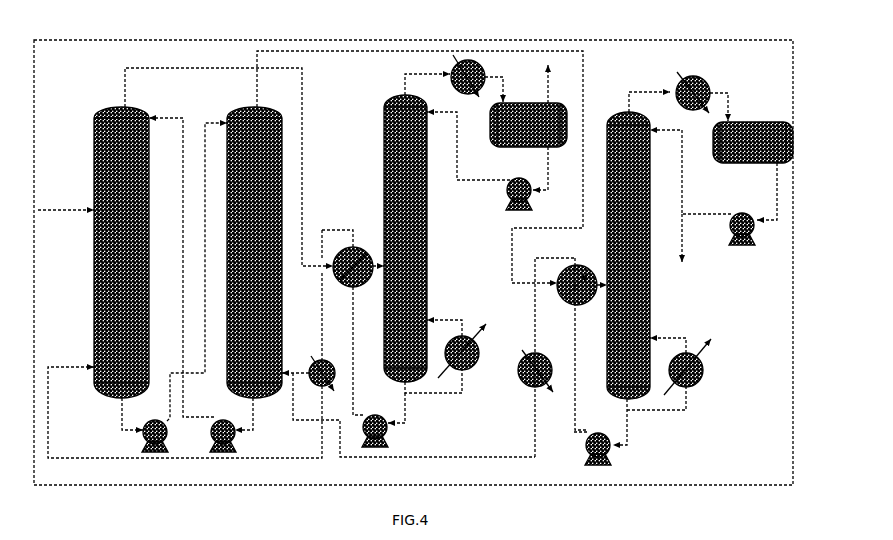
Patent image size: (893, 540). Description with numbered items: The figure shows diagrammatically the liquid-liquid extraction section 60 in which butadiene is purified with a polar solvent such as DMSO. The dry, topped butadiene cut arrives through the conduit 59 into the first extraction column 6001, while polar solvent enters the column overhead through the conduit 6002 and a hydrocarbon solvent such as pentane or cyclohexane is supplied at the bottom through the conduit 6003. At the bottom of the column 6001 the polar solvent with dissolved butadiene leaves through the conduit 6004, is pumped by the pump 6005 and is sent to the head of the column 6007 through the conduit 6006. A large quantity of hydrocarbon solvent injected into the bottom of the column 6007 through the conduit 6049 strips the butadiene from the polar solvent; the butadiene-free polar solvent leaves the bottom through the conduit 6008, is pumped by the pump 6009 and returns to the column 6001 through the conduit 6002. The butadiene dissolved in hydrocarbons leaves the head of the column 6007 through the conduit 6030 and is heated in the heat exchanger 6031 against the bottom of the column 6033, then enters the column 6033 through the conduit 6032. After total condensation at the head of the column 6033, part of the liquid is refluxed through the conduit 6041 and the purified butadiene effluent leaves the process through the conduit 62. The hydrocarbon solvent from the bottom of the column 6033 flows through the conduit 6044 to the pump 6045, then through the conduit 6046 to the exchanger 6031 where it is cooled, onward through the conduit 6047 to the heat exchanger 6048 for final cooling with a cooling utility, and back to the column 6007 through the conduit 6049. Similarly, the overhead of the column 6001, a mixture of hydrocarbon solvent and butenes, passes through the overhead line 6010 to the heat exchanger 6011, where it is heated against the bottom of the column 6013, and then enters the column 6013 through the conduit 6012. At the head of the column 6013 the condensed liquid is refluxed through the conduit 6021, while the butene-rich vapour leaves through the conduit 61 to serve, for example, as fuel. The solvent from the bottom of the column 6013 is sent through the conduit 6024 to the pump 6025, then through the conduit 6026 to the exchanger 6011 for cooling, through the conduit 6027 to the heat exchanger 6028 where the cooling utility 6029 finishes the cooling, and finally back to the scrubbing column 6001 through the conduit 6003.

The conduit 59 is at (66, 197).
The liquid-liquid extraction section 60 is at (413, 262).
The conduit 61 is at (559, 84).
The conduit 62 is at (681, 251).
The first extraction column 6001 is at (121, 252).
The conduit 6002 is at (181, 259).
The conduit 6003 is at (181, 403).
The conduit 6004 is at (111, 414).
The pump 6005 is at (150, 429).
The conduit 6006 is at (213, 119).
The column 6007 is at (254, 252).
The conduit 6008 is at (255, 414).
The pump 6009 is at (240, 436).
The first column overhead line 6010 is at (229, 158).
The heat exchanger 6011 is at (344, 244).
The conduit 6012 is at (378, 261).
The column 6013 is at (405, 238).
The conduit 6021 is at (487, 161).
The conduit 6024 is at (445, 376).
The pump 6025 is at (380, 420).
The conduit 6026 is at (352, 351).
The conduit 6027 is at (312, 316).
The heat exchanger 6028 is at (310, 381).
The cooling utility 6029 is at (318, 364).
The conduit 6030 is at (420, 167).
The heat exchanger 6031 is at (561, 266).
The conduit 6032 is at (601, 276).
The column 6033 is at (628, 255).
The conduit 6041 is at (713, 187).
The conduit 6044 is at (639, 426).
The pump 6045 is at (597, 440).
The conduit 6046 is at (643, 369).
The conduit 6047 is at (537, 357).
The heat exchanger 6048 is at (525, 373).
The conduit 6049 is at (527, 360).